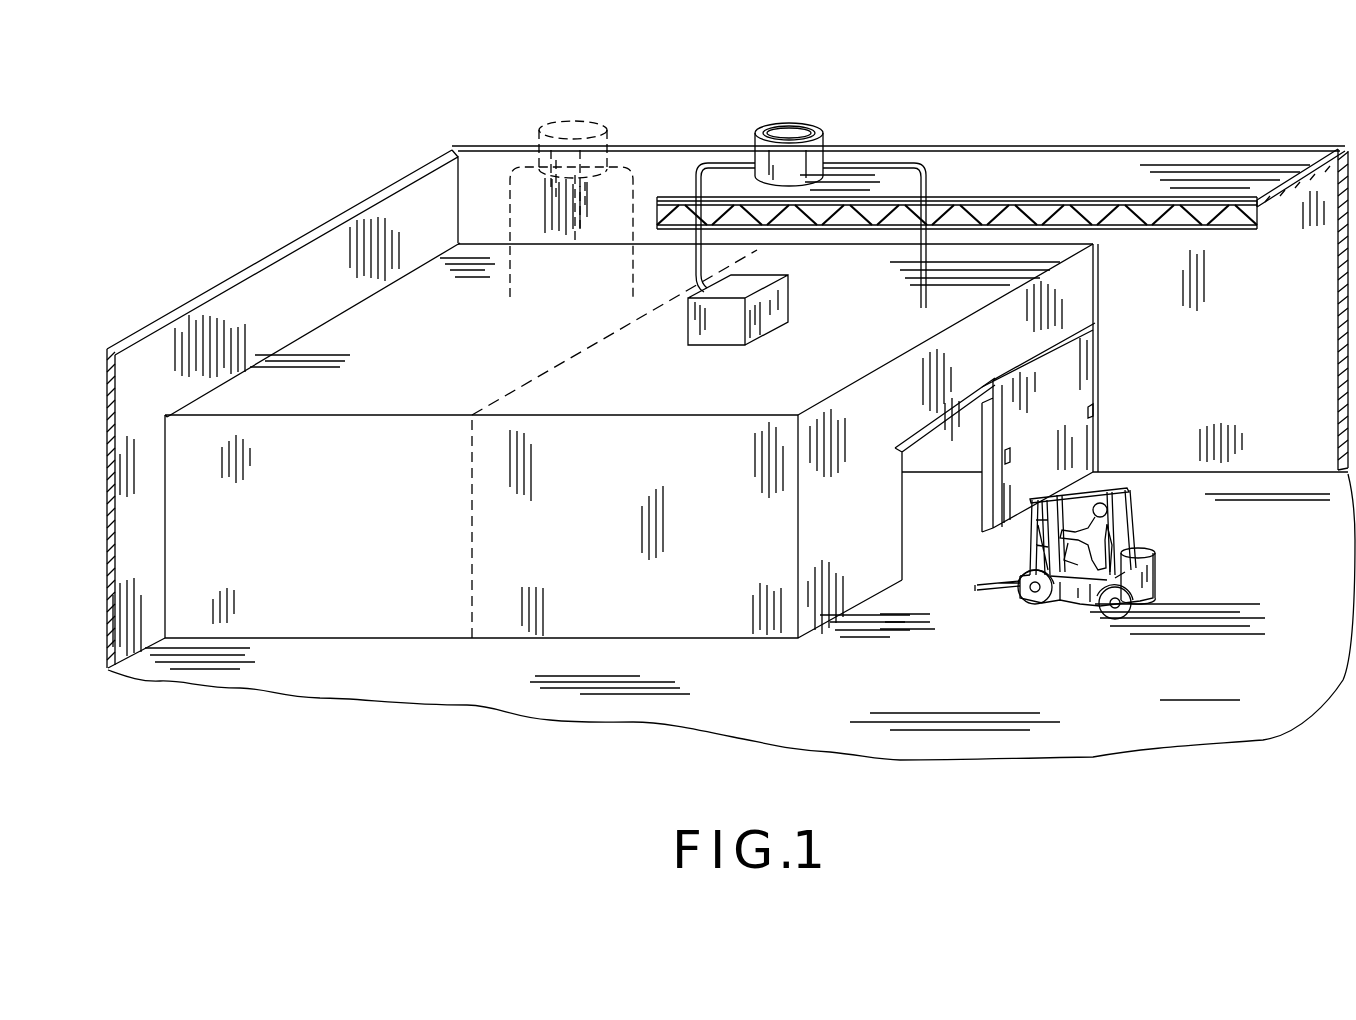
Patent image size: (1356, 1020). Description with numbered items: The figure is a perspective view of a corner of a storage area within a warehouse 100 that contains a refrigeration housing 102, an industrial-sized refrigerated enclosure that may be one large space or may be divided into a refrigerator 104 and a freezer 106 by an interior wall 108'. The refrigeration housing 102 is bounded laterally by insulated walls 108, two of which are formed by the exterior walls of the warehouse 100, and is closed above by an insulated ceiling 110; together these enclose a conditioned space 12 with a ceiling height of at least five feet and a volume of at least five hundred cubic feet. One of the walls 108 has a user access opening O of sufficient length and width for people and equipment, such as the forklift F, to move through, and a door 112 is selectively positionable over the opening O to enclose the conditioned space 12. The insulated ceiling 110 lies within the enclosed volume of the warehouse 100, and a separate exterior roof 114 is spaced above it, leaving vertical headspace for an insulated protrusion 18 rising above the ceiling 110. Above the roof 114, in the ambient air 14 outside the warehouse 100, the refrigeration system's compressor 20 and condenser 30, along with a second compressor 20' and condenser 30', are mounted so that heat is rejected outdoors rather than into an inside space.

The warehouse 100 is at (247, 227).
The refrigeration housing 102 is at (365, 290).
The refrigerator 104 is at (710, 618).
The freezer 106 is at (330, 612).
The insulated walls 108 is at (610, 378).
The interior wall 108' is at (483, 589).
The insulated ceiling 110 is at (312, 357).
The door 112 is at (1086, 368).
The exterior roof 114 is at (958, 160).
The conditioned space 12 is at (923, 512).
The ambient air 14 is at (912, 93).
The insulated protrusion 18 is at (702, 327).
The compressor 20 is at (785, 122).
The condenser 30 is at (811, 183).
The compressor 20' is at (587, 149).
The condenser 30' is at (572, 178).
The forklift F is at (1153, 573).
The user access opening O is at (940, 556).